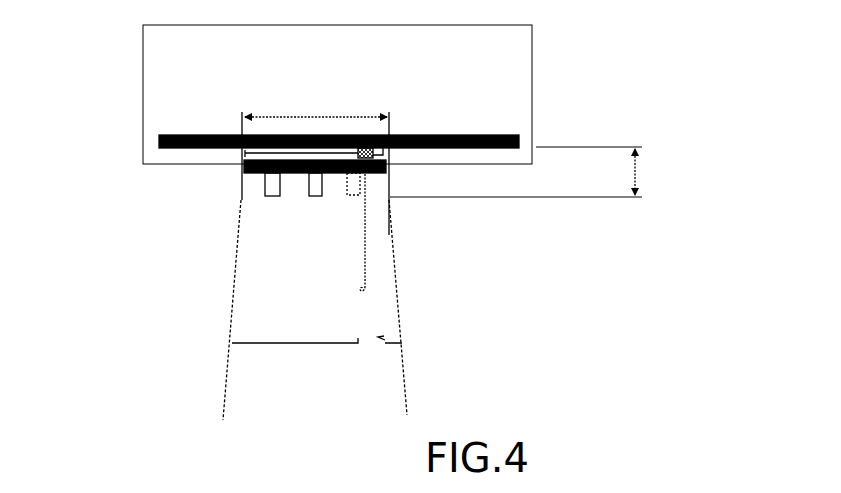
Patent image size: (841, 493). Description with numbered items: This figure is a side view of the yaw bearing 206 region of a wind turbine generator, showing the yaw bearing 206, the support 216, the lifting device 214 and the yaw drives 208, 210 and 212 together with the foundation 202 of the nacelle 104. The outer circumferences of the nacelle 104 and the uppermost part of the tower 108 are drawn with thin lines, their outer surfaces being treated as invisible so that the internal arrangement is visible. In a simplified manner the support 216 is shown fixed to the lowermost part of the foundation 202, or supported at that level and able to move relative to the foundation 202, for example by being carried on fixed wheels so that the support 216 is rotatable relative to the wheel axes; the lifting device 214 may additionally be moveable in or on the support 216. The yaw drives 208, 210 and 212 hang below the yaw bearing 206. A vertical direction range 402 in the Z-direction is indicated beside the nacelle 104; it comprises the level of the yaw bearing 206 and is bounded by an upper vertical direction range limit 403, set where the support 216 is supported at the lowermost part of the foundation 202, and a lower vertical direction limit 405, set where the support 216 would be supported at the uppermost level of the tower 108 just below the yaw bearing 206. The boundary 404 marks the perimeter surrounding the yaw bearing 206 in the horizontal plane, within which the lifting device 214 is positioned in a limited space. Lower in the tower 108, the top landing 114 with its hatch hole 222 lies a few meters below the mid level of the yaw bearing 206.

The nacelle 104 is at (534, 43).
The foundation 202 is at (490, 135).
The support 216 is at (244, 154).
The lifting device 214 is at (372, 134).
The yaw bearing 206 is at (240, 168).
The yaw drive 208 is at (268, 200).
The yaw drive 210 is at (316, 197).
The yaw drive 212 is at (352, 197).
The boundary of a perimeter 404 is at (312, 117).
The upper vertical direction range limit 403 is at (620, 146).
The lower vertical direction limit 405 is at (600, 200).
The vertical direction range 402 is at (637, 172).
The top landing 114 is at (255, 343).
The tower 108 is at (405, 372).
The hatch hole 222 is at (392, 338).